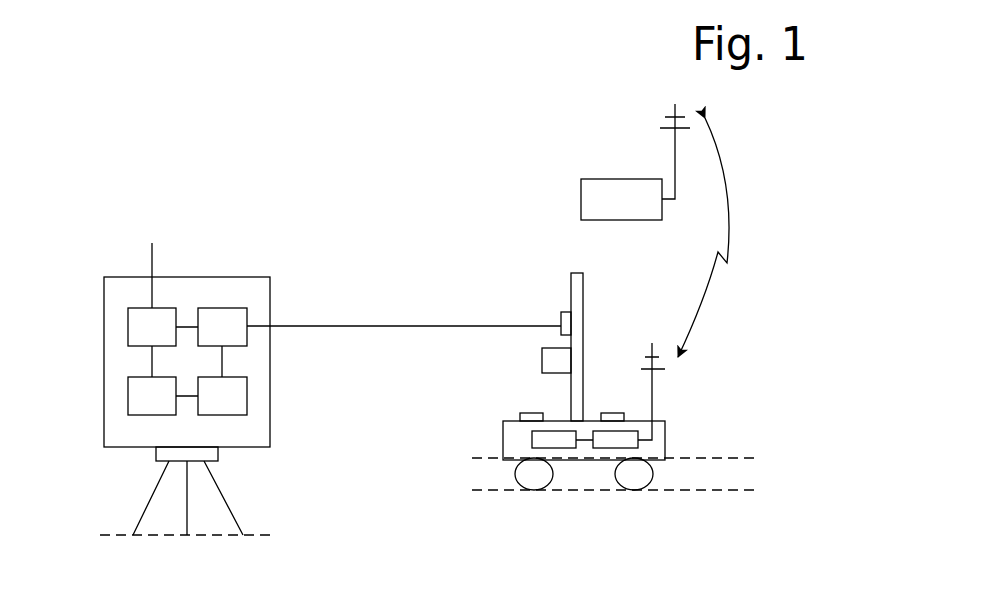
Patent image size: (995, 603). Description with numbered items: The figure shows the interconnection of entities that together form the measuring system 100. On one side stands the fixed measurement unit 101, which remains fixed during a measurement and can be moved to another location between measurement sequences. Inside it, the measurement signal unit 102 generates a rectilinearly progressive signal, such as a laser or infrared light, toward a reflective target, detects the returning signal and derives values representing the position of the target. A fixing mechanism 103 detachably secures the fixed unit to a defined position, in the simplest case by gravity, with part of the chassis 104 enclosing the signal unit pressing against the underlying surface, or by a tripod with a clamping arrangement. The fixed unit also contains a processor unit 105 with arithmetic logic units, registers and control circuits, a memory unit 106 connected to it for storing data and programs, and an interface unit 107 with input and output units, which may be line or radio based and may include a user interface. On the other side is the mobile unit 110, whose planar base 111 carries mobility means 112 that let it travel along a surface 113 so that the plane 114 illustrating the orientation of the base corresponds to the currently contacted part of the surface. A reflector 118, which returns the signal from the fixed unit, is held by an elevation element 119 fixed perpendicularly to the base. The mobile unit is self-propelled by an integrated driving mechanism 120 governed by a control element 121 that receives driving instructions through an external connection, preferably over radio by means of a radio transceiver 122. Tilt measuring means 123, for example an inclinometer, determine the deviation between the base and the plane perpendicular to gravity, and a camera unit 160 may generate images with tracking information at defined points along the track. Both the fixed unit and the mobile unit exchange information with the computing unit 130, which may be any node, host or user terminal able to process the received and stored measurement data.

The measuring system 100 is at (135, 170).
The fixed measurement unit 101 is at (113, 237).
The measurement signal unit 102 is at (226, 308).
The fixing mechanism 103 is at (156, 461).
The chassis 104 is at (104, 356).
The processor unit 105 is at (247, 395).
The memory unit 106 is at (128, 395).
The interface unit 107 is at (148, 308).
The mobile unit 110 is at (710, 359).
The planar base 111 is at (668, 437).
The mobility means 112 is at (632, 490).
The surface 113 is at (472, 490).
The plane 114 is at (745, 457).
The reflector 118 is at (561, 314).
The elevation element 119 is at (583, 273).
The driving mechanism 120 is at (532, 437).
The control element 121 is at (638, 448).
The radio transceiver 122 is at (653, 385).
The tilt measuring means 123 is at (520, 412).
The computing unit 130 is at (620, 179).
The camera unit 160 is at (542, 358).